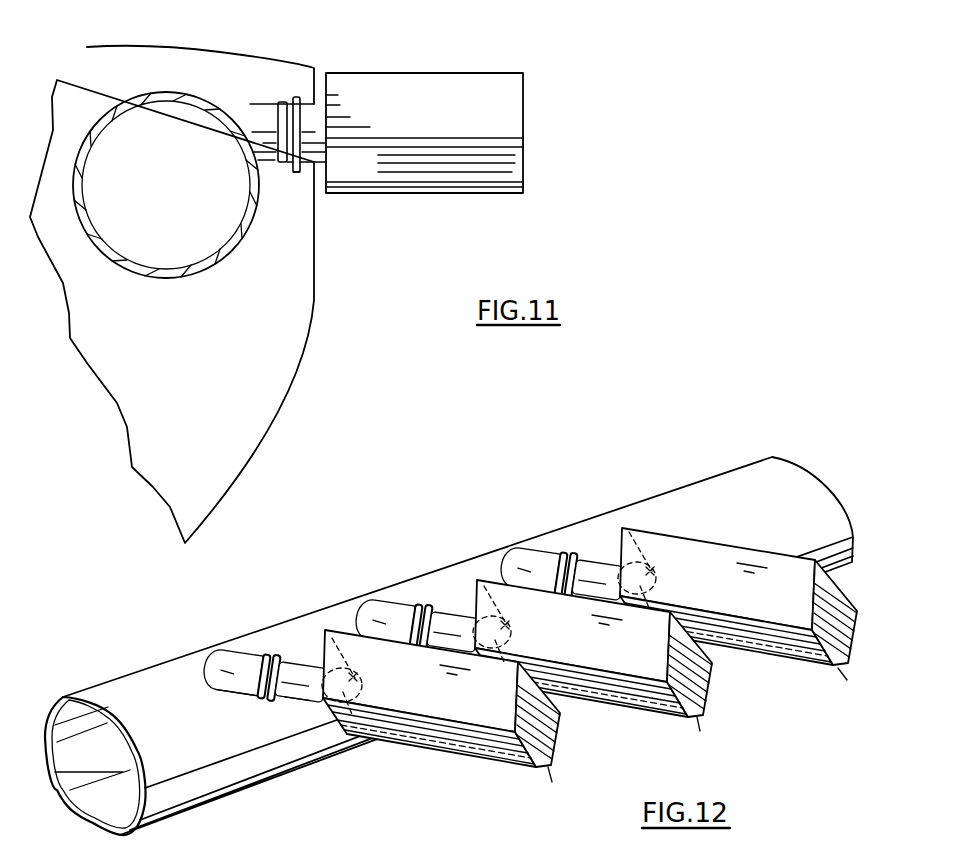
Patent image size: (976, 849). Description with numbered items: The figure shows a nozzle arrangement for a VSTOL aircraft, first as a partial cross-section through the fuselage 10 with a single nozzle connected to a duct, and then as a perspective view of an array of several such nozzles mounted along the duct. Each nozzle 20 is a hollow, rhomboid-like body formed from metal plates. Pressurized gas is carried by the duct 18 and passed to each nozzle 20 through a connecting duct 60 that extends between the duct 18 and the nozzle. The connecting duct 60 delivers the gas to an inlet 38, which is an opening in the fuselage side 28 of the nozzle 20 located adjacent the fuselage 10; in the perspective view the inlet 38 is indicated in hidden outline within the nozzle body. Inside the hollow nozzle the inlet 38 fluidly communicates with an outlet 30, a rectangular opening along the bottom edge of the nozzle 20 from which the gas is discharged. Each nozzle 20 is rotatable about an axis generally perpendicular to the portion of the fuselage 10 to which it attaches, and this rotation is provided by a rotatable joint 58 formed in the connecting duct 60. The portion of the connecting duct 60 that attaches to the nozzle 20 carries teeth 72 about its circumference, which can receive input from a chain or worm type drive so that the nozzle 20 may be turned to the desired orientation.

In FIG. 11, the fuselage 10 is at (312, 317).
In FIG. 11, the duct 18 is at (236, 258).
In FIG. 12, the duct 18 is at (180, 769).
In FIG. 11, the nozzle 20 is at (430, 121).
In FIG. 12, the nozzle 20 is at (853, 645).
In FIG. 12, the fuselage side 28 is at (598, 537).
In FIG. 12, the outlet 30 is at (701, 738).
In FIG. 11, the inlet 38 is at (300, 173).
In FIG. 12, the inlet 38 is at (655, 545).
In FIG. 11, the rotatable joint 58 is at (283, 101).
In FIG. 12, the rotatable joint 58 is at (529, 547).
In FIG. 11, the connecting duct 60 is at (330, 148).
In FIG. 12, the connecting duct 60 is at (309, 702).
In FIG. 11, the teeth 72 is at (297, 96).
In FIG. 12, the teeth 72 is at (570, 544).